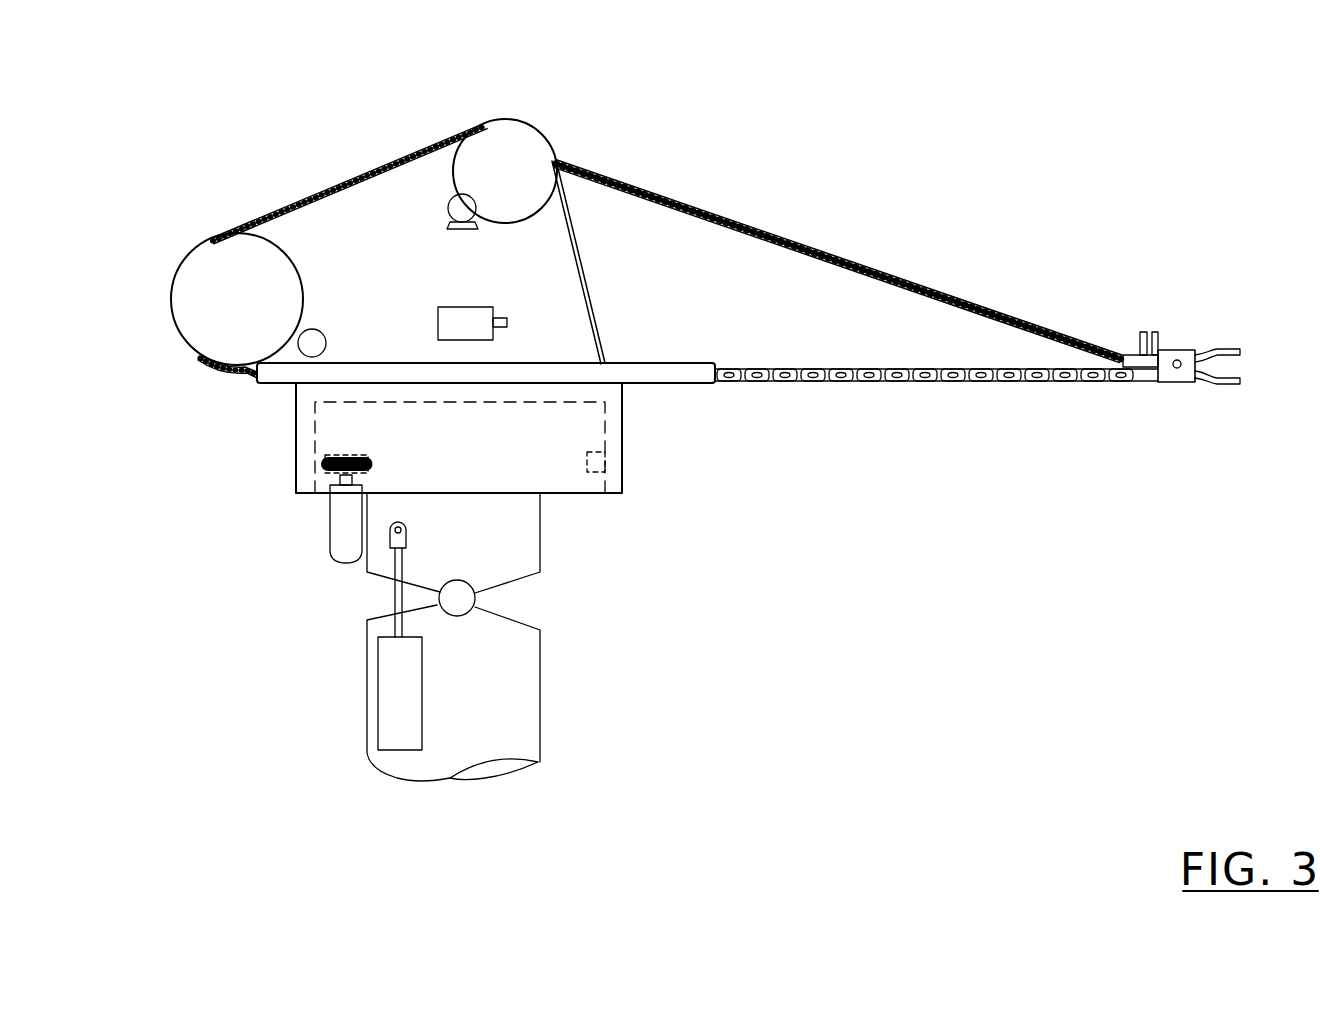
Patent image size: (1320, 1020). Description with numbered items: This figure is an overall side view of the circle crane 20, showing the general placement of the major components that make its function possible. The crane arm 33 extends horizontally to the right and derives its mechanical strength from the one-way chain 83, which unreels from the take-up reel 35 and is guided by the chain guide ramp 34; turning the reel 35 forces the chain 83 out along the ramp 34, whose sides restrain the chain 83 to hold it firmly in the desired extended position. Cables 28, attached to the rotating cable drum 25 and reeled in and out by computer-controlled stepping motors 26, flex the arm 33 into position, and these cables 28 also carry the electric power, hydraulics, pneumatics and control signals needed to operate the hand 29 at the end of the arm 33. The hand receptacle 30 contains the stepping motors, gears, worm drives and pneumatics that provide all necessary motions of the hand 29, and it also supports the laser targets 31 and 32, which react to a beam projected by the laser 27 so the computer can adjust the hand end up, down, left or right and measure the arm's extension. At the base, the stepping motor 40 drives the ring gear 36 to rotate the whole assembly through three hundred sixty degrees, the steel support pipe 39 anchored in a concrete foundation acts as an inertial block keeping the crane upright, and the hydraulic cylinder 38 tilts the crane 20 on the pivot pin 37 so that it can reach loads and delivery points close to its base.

The circle crane 20 is at (622, 423).
The cable drum 25 is at (522, 120).
The stepping motor 26 is at (452, 198).
The laser 27 is at (493, 308).
The cable 28 is at (812, 243).
The hand 29 is at (1230, 384).
The hand receptacle 30 is at (1170, 383).
The laser-beam target 31 is at (1155, 332).
The laser-beam target 32 is at (1140, 337).
The crane arm 33 is at (988, 427).
The chain guide ramp 34 is at (277, 383).
The reel 35 is at (203, 237).
The ring gear 36 is at (590, 472).
The pivot pin 37 is at (475, 602).
The hydraulic cylinder 38 is at (392, 680).
The steel support pipe 39 is at (365, 633).
The stepping motor 40 is at (330, 535).
The one-way chain 83 is at (790, 383).